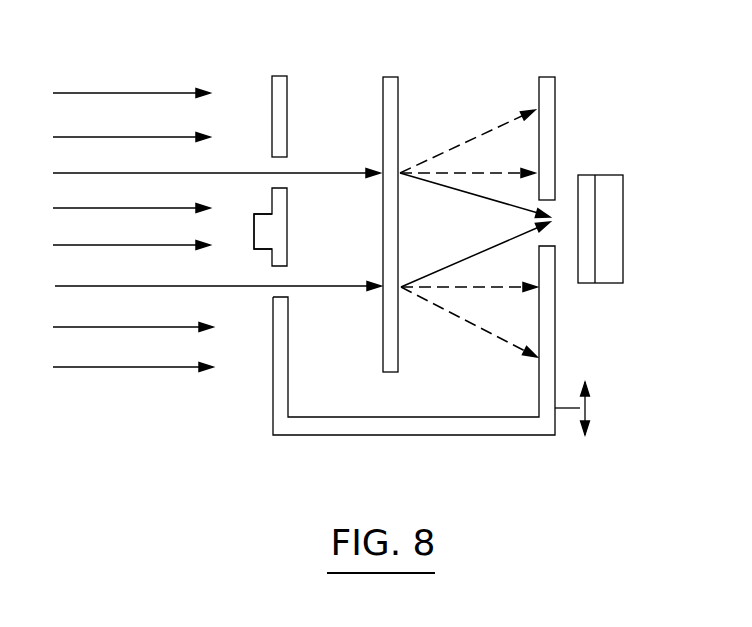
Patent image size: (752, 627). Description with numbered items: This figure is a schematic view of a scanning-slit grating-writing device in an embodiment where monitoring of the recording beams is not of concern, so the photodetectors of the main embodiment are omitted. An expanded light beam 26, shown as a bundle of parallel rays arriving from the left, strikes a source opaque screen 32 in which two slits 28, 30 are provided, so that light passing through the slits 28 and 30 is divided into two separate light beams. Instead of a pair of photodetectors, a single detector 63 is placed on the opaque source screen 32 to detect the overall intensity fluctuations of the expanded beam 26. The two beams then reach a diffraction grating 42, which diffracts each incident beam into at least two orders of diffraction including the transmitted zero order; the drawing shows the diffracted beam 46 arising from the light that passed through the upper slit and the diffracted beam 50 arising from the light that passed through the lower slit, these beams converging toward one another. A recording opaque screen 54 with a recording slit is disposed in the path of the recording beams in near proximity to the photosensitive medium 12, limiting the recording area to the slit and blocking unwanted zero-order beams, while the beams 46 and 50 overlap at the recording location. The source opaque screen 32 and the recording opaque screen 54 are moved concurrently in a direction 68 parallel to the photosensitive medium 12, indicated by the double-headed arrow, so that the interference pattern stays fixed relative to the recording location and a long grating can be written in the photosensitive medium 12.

The photosensitive medium 12 is at (595, 175).
The expanded light beam 26 is at (135, 281).
The slit 28 is at (281, 163).
The slit 30 is at (278, 278).
The source opaque screen 32 is at (273, 398).
The first diffraction grating 42 is at (400, 88).
The diffracted beam 46 is at (460, 195).
The diffracted beam 50 is at (505, 241).
The recording opaque screen 54 is at (557, 313).
The single detector 63 is at (254, 232).
The direction 68 is at (586, 408).